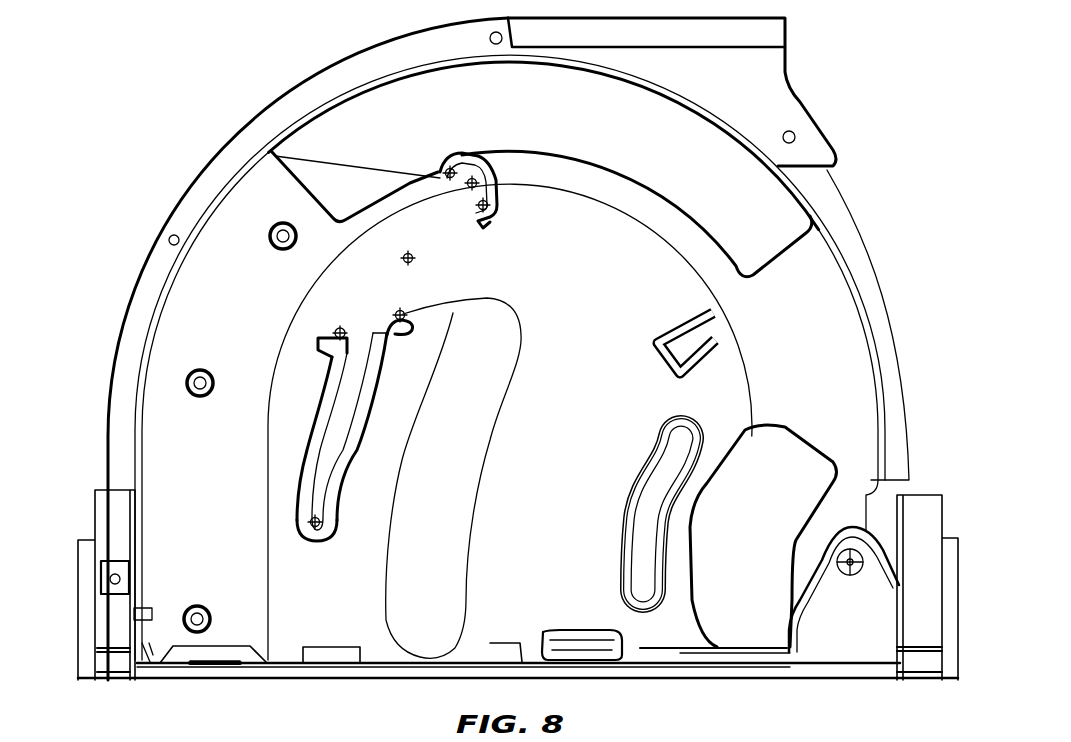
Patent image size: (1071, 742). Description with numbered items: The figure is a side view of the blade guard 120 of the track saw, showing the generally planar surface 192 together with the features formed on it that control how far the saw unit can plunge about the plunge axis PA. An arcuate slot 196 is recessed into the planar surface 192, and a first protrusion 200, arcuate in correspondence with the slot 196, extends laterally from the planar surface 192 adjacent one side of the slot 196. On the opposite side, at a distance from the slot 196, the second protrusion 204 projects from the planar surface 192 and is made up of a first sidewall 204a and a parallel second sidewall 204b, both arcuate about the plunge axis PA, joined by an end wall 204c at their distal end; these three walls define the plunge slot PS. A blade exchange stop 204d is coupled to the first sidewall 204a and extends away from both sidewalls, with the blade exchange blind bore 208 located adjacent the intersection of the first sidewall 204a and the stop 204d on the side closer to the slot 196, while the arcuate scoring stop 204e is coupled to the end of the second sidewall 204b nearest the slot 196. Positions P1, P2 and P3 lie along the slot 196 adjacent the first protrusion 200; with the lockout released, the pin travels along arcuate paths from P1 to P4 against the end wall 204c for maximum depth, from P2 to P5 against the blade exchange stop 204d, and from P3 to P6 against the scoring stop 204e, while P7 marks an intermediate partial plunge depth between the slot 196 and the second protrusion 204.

The blade guard 120 is at (340, 62).
The first protrusion 200 is at (440, 158).
The slot 196 is at (440, 182).
The planar surface 192 is at (353, 283).
The blade exchange blind bore 208 is at (338, 328).
The second protrusion 204 is at (303, 463).
The first sidewall 204a is at (337, 427).
The second sidewall 204b is at (335, 400).
The end wall 204c is at (303, 530).
The blade exchange stop 204d is at (318, 338).
The scoring stop 204e is at (397, 337).
The plunge position P1 is at (474, 178).
The blade exchange position P2 is at (450, 168).
The scoring position P3 is at (487, 201).
The maximum plunge depth position P4 is at (322, 521).
The blade exchange plunge depth position P5 is at (387, 328).
The scoring plunge depth position P6 is at (404, 316).
The partial plunge depth position P7 is at (414, 262).
The plunge slot PS is at (323, 473).
The plunge axis PA is at (840, 578).